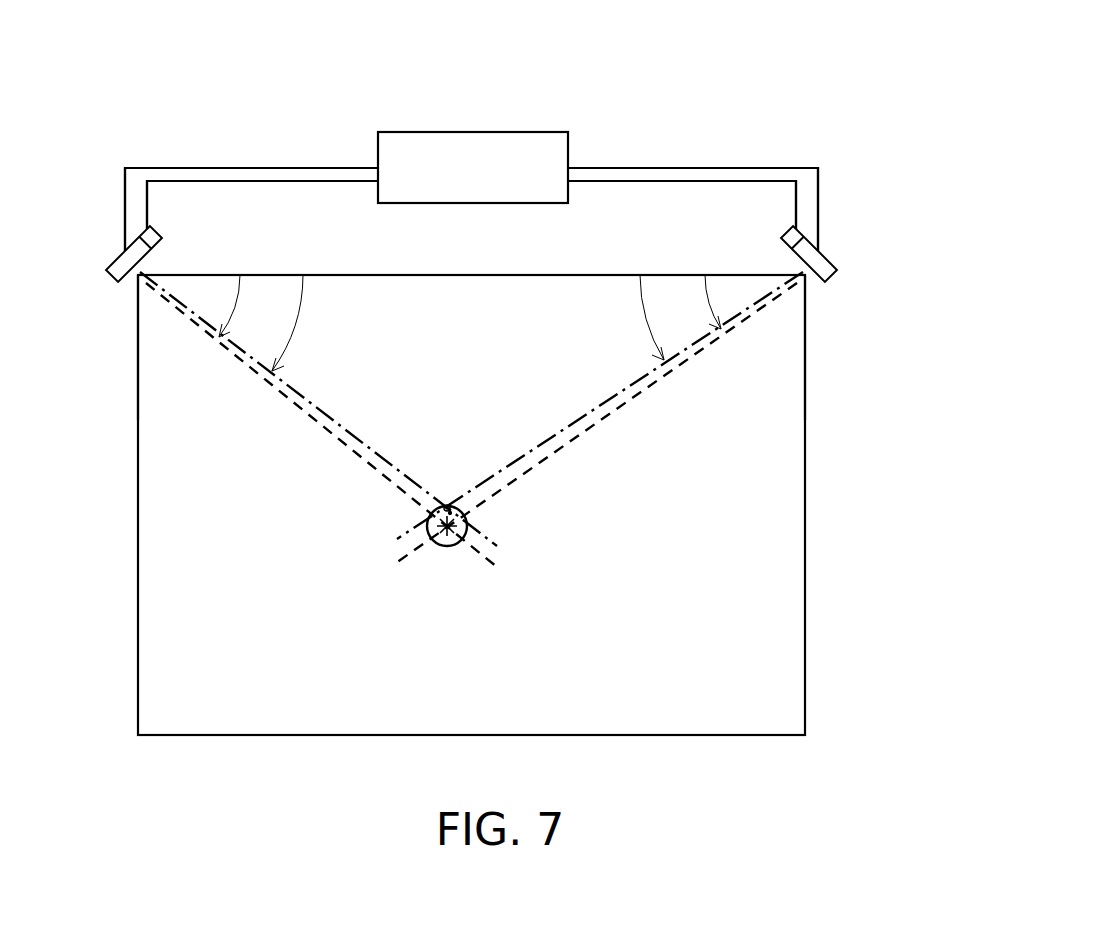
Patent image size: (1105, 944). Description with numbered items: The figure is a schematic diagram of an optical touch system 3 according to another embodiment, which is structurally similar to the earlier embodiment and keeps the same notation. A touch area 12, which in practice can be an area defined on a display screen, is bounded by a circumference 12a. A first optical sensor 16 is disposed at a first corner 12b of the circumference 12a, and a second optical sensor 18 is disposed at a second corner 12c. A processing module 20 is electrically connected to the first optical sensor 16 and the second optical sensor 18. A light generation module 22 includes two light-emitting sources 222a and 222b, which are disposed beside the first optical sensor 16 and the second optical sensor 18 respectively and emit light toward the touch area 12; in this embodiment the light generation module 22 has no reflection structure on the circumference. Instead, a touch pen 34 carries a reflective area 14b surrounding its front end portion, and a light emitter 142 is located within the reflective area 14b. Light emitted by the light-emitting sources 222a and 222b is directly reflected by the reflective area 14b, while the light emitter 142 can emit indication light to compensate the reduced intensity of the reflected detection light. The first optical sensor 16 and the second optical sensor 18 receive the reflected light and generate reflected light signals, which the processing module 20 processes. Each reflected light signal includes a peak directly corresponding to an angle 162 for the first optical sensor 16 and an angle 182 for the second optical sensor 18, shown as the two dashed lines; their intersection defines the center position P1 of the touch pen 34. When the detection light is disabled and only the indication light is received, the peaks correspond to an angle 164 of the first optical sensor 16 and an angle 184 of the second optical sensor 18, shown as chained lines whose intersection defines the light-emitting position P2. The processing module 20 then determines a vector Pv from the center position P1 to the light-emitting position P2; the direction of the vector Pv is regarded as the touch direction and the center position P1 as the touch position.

The optical touch system 3 is at (1003, 113).
The touch area 12 is at (806, 567).
The circumference 12a is at (497, 273).
The first corner 12b is at (156, 292).
The second corner 12c is at (789, 292).
The reflective area 14b is at (468, 519).
The light emitter 142 is at (440, 508).
The first optical sensor 16 is at (120, 258).
The second optical sensor 18 is at (822, 262).
The processing module 20 is at (528, 132).
The light generation module 22 is at (471, 209).
The light-emitting source 222a is at (157, 232).
The light-emitting source 222b is at (787, 232).
The touch pen 34 is at (455, 545).
The angle 162 is at (251, 306).
The angle 164 is at (310, 323).
The angle 182 is at (688, 302).
The angle 184 is at (628, 317).
The center position P1 is at (446, 532).
The light-emitting position P2 is at (443, 505).
The vector Pv is at (452, 513).